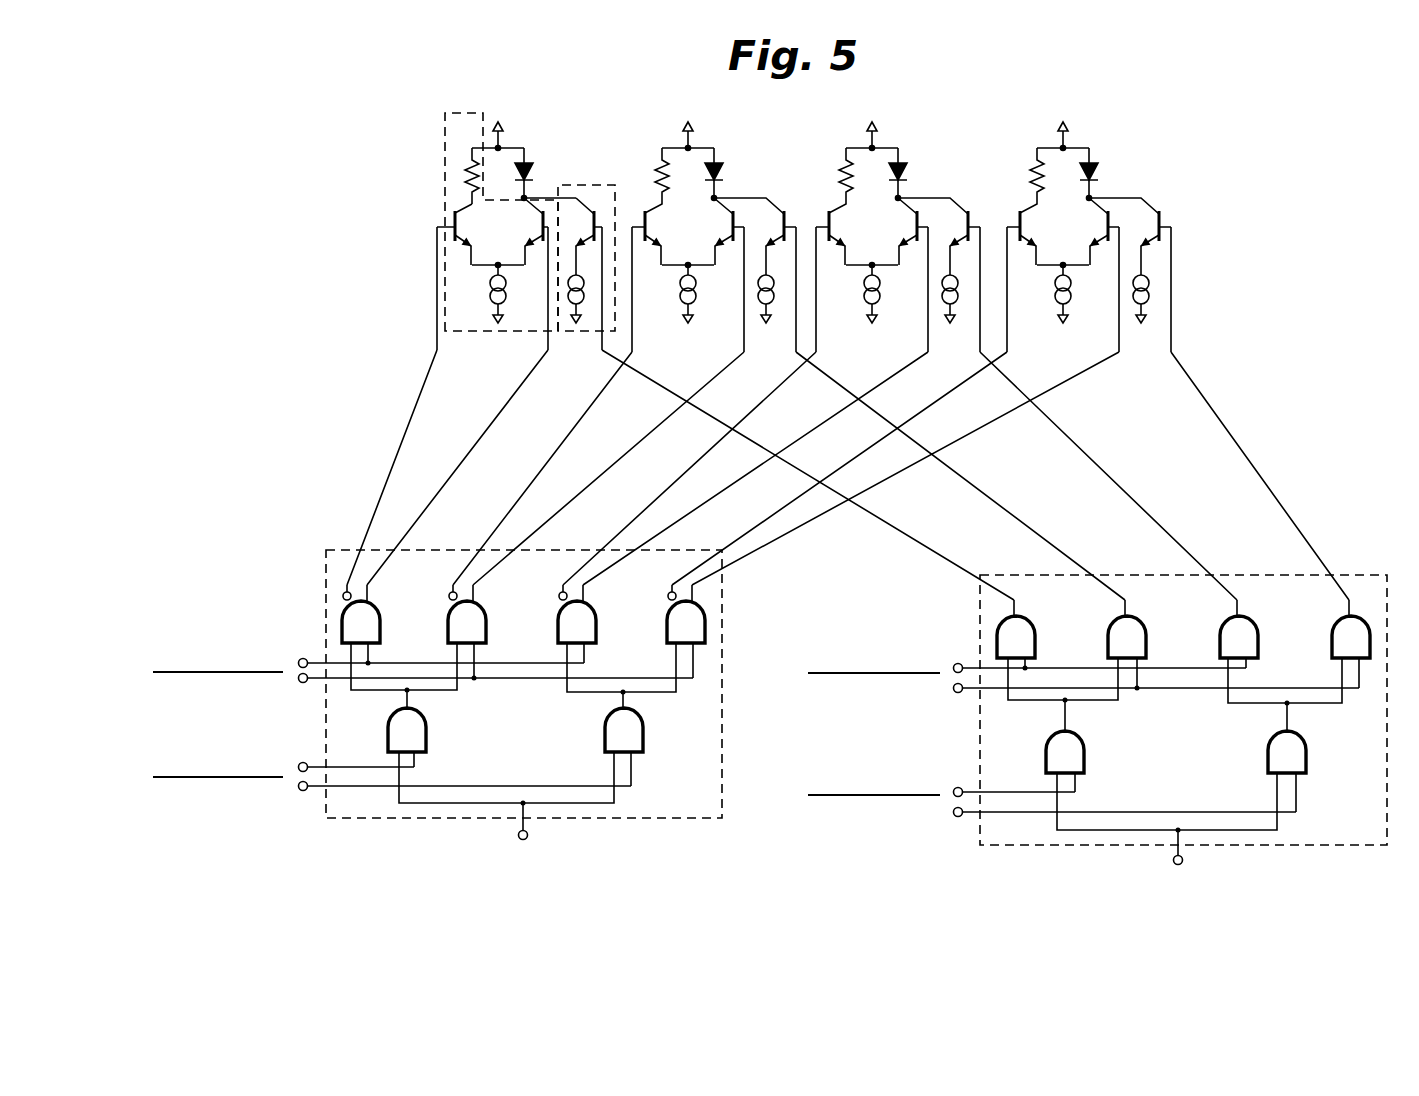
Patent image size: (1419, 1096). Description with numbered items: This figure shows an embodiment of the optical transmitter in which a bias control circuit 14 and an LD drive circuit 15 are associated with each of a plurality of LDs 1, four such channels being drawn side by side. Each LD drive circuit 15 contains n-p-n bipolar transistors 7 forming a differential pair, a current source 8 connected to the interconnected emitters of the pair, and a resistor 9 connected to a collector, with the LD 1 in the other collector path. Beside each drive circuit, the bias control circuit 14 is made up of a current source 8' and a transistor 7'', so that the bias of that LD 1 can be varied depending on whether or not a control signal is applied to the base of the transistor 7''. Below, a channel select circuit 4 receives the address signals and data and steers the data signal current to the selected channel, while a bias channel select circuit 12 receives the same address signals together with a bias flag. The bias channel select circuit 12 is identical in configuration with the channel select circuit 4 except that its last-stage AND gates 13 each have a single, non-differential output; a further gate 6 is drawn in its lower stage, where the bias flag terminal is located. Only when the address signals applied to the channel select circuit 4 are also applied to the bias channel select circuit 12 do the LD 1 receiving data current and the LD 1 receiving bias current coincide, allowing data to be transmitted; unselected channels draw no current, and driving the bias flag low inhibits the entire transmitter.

The LD 1 is at (527, 143).
The channel select circuit 4 is at (695, 820).
The AND gate 6 is at (1302, 756).
The n-p-n bipolar transistor 7 is at (492, 233).
The transistor 7'' is at (607, 210).
The current source 8 is at (480, 314).
The current source 8' is at (579, 327).
The resistor 9 is at (442, 176).
The bias channel select circuit 12 is at (1365, 575).
The AND gate 13 is at (1334, 641).
The bias control circuit 14 is at (586, 220).
The LD drive circuit 15 is at (490, 194).